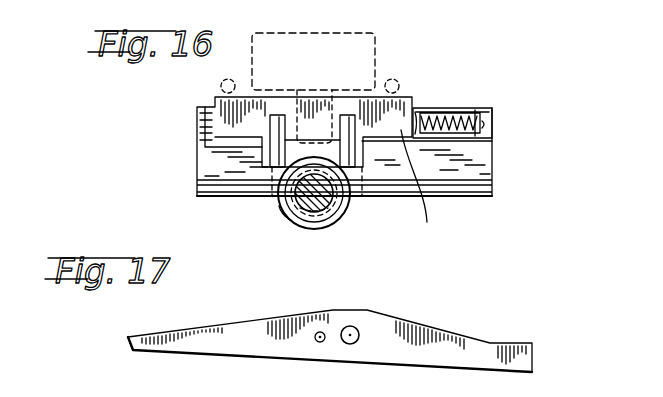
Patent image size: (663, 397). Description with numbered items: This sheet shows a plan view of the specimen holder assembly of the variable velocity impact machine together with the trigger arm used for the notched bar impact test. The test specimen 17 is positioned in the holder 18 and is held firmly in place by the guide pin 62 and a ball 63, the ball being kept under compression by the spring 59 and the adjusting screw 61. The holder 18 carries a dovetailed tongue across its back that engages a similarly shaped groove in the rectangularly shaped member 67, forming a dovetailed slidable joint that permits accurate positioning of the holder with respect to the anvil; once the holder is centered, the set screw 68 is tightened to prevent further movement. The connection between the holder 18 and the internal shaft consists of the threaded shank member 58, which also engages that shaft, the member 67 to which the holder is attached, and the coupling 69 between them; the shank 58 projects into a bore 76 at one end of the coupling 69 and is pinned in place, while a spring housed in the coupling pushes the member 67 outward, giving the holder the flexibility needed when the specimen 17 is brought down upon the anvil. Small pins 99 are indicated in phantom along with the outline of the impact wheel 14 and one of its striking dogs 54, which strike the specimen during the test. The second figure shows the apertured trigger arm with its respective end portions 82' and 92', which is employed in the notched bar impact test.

In FIG. 16, the impact wheel 14 is at (370, 41).
In FIG. 16, the striking dogs 54 is at (338, 87).
In FIG. 16, the pins 99 is at (221, 83).
In FIG. 16, the ball 63 is at (416, 118).
In FIG. 16, the spring 59 is at (462, 112).
In FIG. 16, the adjusting screw 61 is at (494, 114).
In FIG. 16, the holder 18 is at (493, 147).
In FIG. 16, the guide pin 62 is at (276, 152).
In FIG. 16, the coupling 69 is at (281, 206).
In FIG. 16, the set screw 68 is at (295, 224).
In FIG. 16, the bore 76 is at (318, 213).
In FIG. 16, the rectangularly shaped member 67 is at (336, 214).
In FIG. 16, the shank member 58 is at (340, 206).
In FIG. 16, the test specimen 17 is at (420, 225).
In FIG. 17, the end portion 92' is at (103, 346).
In FIG. 17, the end portion 82' is at (536, 335).